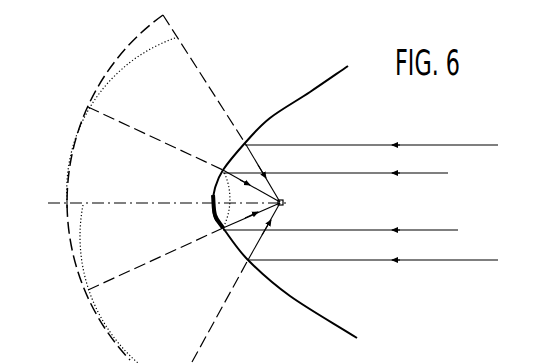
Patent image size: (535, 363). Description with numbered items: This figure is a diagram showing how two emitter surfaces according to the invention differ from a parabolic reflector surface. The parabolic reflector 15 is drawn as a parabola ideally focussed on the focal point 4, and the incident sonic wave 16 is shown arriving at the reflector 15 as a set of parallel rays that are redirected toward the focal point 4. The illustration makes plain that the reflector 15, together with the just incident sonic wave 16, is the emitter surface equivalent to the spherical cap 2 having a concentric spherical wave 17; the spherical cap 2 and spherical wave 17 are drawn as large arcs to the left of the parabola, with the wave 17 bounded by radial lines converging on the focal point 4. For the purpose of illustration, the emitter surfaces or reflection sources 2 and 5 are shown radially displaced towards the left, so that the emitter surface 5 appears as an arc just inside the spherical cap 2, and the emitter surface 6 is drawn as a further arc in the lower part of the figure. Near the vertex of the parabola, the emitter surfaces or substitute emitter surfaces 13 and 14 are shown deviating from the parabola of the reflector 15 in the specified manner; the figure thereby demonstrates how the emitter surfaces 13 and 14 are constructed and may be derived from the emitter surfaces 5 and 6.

The spherical cap 2 is at (106, 70).
The emitter surface 5 is at (122, 81).
The emitter surface 6 is at (84, 237).
The concentric spherical wave 17 is at (206, 80).
The parabolic reflector 15 is at (311, 90).
The emitter surface 14 is at (214, 216).
The emitter surface 13 is at (246, 168).
The focal point 4 is at (284, 203).
The incident sonic wave 16 is at (398, 146).